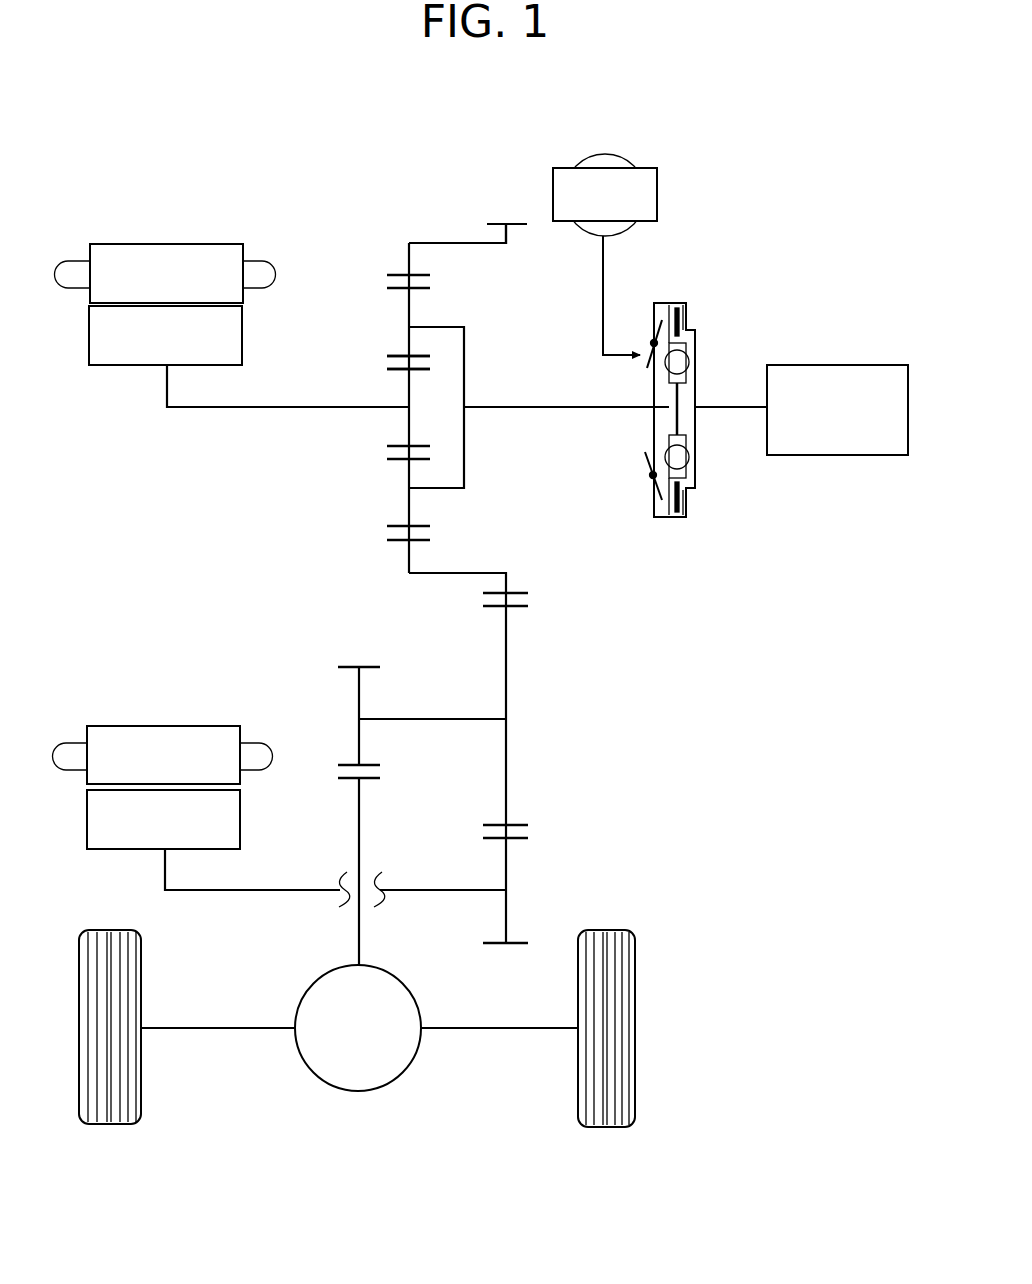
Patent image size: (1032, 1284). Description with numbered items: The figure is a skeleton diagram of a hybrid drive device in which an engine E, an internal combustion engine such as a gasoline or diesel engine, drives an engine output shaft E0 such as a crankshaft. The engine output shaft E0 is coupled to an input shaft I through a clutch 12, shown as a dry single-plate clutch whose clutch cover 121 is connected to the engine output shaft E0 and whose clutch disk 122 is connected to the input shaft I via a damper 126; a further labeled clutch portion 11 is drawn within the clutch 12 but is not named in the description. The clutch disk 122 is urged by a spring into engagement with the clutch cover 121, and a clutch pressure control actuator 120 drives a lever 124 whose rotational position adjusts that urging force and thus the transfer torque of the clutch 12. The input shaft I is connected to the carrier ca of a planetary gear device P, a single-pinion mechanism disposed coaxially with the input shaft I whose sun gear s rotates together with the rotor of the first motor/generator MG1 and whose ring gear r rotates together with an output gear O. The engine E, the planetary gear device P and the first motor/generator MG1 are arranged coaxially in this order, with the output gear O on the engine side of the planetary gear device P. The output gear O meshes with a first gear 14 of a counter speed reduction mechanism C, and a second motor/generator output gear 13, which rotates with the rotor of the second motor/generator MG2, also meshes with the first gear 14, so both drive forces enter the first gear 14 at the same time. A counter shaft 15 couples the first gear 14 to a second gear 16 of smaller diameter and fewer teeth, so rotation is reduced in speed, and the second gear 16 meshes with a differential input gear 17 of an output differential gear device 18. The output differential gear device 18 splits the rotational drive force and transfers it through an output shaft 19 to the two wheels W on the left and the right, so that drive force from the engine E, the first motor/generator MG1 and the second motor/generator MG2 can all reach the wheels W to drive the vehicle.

The first motor/generator MG1 is at (164, 240).
The second motor/generator MG2 is at (162, 720).
The planetary gear device P is at (392, 260).
The ring gear r is at (420, 243).
The sun gear s is at (409, 390).
The carrier ca is at (464, 330).
The input shaft I is at (545, 407).
The output gear O is at (520, 590).
The clutch pressure control actuator 120 is at (645, 167).
The lever 124 is at (648, 370).
The clutch 12 is at (699, 280).
The clutch cover 121 is at (690, 335).
The clutch plate 11 is at (692, 345).
The damper 126 is at (690, 360).
The clutch disk 122 is at (669, 427).
The engine E is at (845, 365).
The engine output shaft E0 is at (733, 407).
The counter speed reduction mechanism C is at (566, 670).
The counter shaft 15 is at (438, 719).
The first gear 14 is at (506, 782).
The second motor/generator output gear 13 is at (516, 945).
The second gear 16 is at (360, 740).
The differential input gear 17 is at (360, 808).
The output differential gear device 18 is at (388, 1090).
The output shaft 19 is at (468, 1028).
The wheels W is at (107, 930).